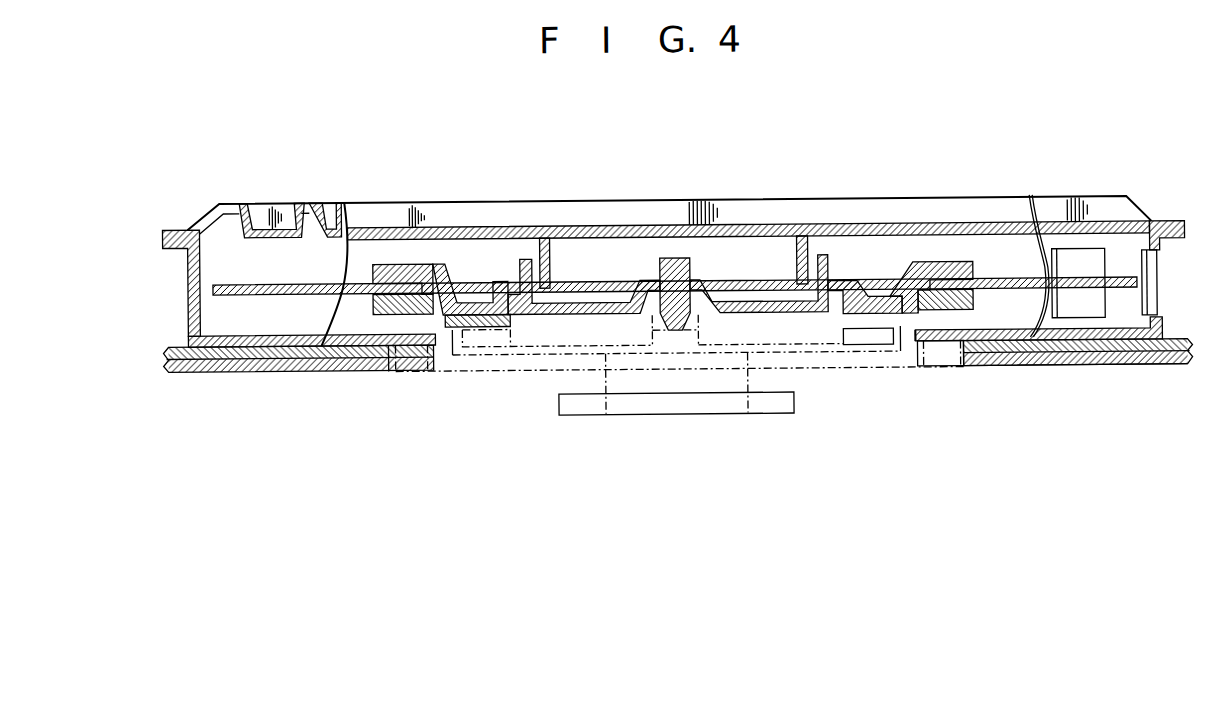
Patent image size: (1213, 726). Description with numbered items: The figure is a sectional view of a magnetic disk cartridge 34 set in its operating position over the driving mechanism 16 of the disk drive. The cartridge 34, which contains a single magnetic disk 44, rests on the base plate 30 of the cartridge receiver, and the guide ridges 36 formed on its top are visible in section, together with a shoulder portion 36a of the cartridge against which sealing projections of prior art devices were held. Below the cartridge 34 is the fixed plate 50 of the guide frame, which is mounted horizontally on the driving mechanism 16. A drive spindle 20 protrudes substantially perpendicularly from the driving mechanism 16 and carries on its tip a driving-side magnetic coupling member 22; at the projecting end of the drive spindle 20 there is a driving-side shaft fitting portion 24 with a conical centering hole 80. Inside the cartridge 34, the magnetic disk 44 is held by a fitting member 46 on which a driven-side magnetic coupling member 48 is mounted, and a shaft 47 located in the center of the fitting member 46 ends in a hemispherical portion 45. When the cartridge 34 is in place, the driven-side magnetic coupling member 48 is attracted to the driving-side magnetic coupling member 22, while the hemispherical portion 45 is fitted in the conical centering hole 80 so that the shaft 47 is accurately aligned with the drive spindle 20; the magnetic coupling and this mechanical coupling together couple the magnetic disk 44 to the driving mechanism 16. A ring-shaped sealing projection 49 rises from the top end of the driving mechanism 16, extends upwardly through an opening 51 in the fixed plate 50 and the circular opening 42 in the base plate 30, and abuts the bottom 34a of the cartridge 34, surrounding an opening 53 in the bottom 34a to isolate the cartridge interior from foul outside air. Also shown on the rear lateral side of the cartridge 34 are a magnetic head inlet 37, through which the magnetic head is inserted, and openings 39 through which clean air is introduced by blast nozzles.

The driving mechanism 16 is at (550, 396).
The drive spindle 20 is at (693, 336).
The driving-side magnetic coupling member 22 is at (868, 346).
The driving-side shaft fitting portion 24 is at (698, 340).
The base plate 30 is at (1175, 342).
The cartridge 34 is at (826, 186).
The bottom 34a is at (1077, 345).
The guide ridges 36 is at (618, 206).
The shoulder portion 36a is at (173, 243).
The magnetic head inlet 37 is at (1157, 281).
The openings 39 is at (1097, 265).
The circular opening 42 is at (400, 360).
The magnetic disk 44 is at (1008, 280).
The hemispherical portion 45 is at (698, 318).
The fitting member 46 is at (927, 263).
The shaft 47 is at (712, 293).
The driven-side magnetic coupling member 48 is at (870, 305).
The sealing projection 49 is at (943, 360).
The fixed plate 50 is at (1168, 360).
The opening 51 is at (397, 352).
The opening 53 is at (908, 342).
The conical centering hole 80 is at (656, 322).